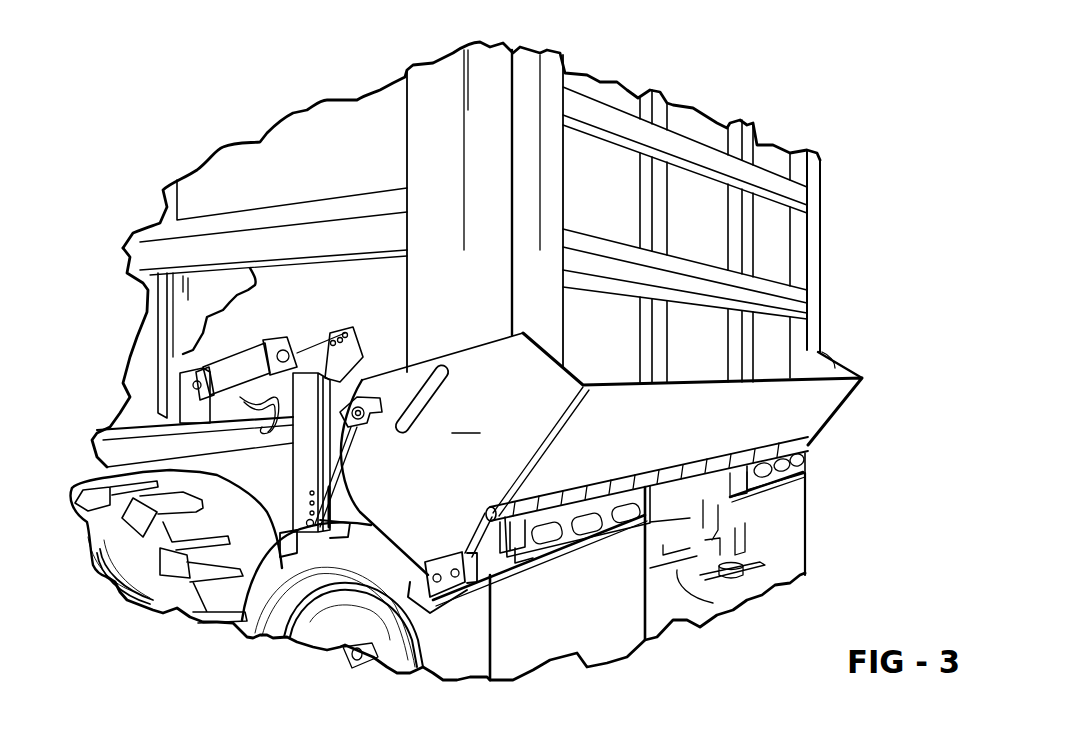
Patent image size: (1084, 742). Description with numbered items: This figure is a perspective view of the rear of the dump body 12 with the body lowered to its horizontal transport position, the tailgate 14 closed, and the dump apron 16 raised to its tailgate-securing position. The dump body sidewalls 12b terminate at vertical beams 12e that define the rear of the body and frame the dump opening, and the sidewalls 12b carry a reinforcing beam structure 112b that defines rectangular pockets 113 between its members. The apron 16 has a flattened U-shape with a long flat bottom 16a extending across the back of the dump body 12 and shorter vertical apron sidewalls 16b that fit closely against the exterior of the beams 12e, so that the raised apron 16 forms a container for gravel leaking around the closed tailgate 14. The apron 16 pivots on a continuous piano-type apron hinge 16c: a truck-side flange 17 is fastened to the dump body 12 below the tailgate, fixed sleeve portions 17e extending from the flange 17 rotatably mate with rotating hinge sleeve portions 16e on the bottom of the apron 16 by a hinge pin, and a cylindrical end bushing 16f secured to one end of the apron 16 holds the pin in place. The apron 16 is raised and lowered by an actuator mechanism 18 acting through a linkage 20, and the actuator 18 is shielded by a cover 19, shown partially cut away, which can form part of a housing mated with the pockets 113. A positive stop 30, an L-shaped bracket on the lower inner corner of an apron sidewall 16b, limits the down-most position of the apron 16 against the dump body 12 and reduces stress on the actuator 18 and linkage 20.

The dump body 12 is at (263, 140).
The dump body sidewalls 12b is at (306, 133).
The vertical beams 12e is at (437, 92).
The reinforcing beam structure 112b is at (347, 240).
The pockets 113 is at (283, 298).
The tailgate 14 is at (780, 233).
The dump apron 16 is at (843, 407).
The bottom 16a is at (802, 474).
The apron sidewalls 16b is at (823, 351).
The apron hinge 16c is at (489, 514).
The rotating hinge sleeve portions 16e is at (563, 482).
The cylindrical end bushing 16f is at (510, 596).
The truck-side flange 17 is at (618, 487).
The fixed sleeve portions 17e is at (613, 483).
The actuator mechanism 18 is at (240, 352).
The cover 19 is at (210, 298).
The linkage 20 is at (355, 327).
The positive stop 30 is at (472, 548).